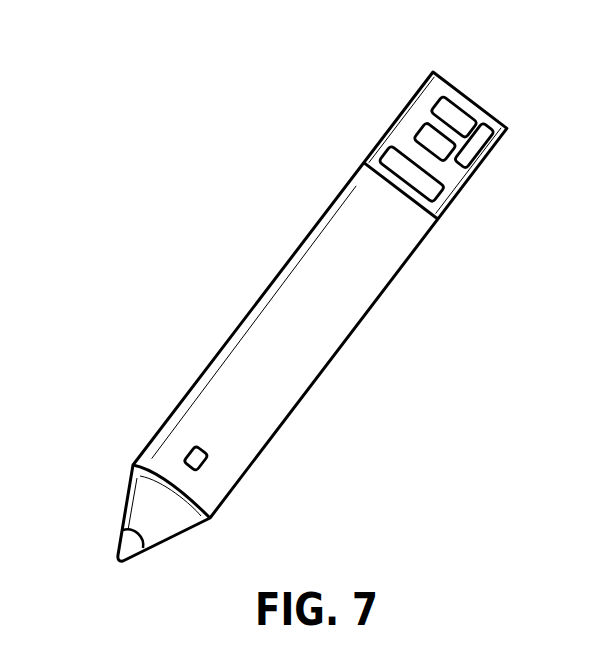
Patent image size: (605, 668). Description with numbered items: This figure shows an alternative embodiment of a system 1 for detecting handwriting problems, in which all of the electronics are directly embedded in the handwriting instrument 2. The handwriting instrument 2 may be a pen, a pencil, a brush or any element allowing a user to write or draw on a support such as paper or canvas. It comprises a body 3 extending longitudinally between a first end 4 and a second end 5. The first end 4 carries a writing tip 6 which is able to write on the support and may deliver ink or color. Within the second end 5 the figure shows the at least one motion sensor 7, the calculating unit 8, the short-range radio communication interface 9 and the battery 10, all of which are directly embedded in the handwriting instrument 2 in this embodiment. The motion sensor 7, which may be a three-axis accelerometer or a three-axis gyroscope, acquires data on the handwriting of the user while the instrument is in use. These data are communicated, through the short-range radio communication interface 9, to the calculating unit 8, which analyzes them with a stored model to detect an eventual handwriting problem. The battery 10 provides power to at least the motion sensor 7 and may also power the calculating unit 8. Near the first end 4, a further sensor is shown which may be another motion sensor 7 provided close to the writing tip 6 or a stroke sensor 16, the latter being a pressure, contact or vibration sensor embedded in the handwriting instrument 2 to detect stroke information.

The system 1 is at (301, 297).
The handwriting instrument 2 is at (160, 401).
The body 3 is at (220, 408).
The first end 4 is at (148, 490).
The second end 5 is at (408, 102).
The writing tip 6 is at (127, 542).
The motion sensor 7 is at (463, 122).
The calculating unit 8 is at (428, 138).
The short-range radio communication interface 9 is at (470, 158).
The battery 10 is at (422, 187).
The stroke sensor 16 is at (187, 457).